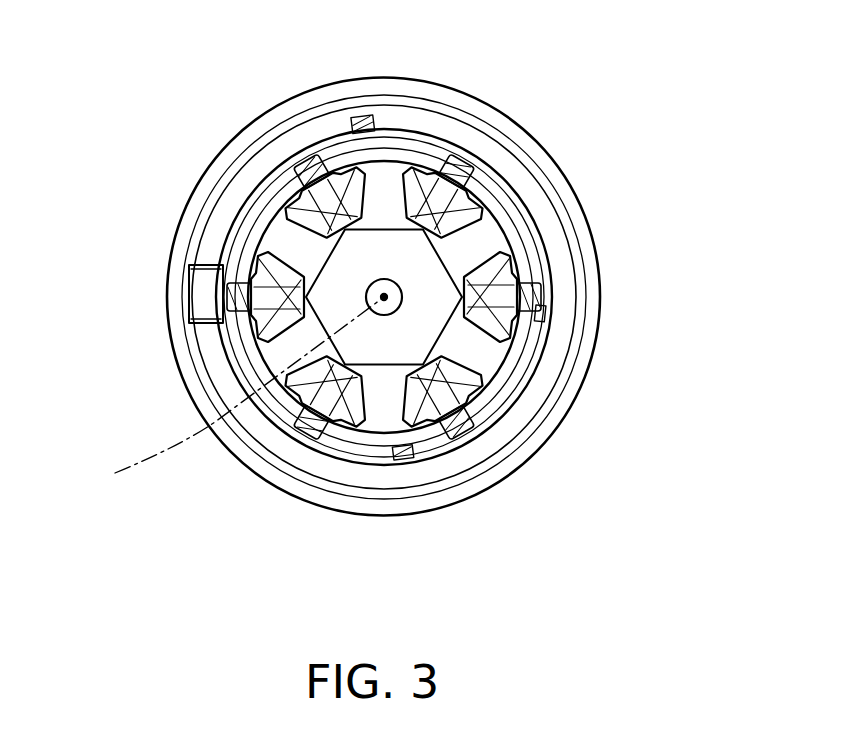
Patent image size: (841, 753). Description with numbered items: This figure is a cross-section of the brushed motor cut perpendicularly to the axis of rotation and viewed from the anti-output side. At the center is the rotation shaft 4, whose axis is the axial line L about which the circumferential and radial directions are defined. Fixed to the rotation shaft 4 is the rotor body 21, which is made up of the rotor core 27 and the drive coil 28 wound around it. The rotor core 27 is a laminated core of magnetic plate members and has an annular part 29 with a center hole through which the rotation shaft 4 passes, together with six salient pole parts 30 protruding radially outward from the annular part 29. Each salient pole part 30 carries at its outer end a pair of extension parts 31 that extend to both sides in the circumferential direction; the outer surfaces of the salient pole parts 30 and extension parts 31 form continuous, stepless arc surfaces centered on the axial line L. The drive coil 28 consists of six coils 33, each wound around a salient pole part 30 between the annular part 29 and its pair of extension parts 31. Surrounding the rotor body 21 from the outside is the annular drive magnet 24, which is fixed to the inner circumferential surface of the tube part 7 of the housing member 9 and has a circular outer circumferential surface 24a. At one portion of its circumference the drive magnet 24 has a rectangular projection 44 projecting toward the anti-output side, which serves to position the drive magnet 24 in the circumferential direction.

The tube part 7 is at (383, 259).
The housing member 9 is at (433, 83).
The drive magnet 24 is at (549, 199).
The outer circumferential surface 24a is at (498, 119).
The rotor core 27 is at (89, 84).
The annular part 29 is at (347, 123).
The salient pole parts 30 is at (282, 242).
The extension parts 31 is at (281, 182).
The coils 33 is at (468, 307).
The drive coil 28 is at (504, 272).
The projection 44 is at (203, 300).
The rotor body 21 is at (233, 335).
The axial line L is at (238, 391).
The rotation shaft 4 is at (396, 314).